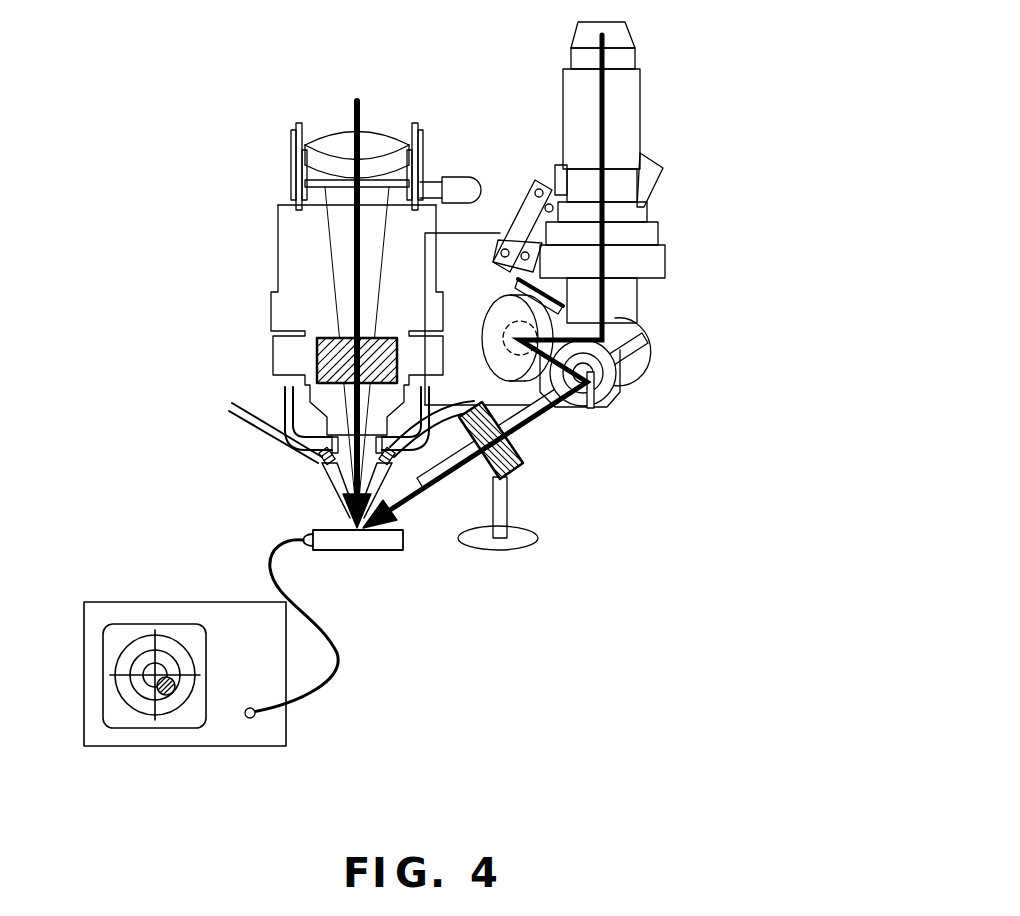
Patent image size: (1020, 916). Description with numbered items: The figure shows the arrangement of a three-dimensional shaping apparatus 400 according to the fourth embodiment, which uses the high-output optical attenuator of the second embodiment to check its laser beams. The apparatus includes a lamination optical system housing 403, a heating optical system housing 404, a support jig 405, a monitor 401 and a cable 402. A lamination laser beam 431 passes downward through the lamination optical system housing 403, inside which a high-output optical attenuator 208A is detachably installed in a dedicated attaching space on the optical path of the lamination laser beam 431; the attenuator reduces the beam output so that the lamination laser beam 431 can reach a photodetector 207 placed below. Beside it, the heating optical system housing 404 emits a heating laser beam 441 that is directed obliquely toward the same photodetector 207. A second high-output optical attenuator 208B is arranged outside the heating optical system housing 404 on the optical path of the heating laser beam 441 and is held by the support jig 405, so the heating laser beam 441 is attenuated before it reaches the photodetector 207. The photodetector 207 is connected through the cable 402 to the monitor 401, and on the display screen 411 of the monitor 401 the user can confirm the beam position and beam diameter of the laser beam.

The 3D shaping apparatus 400 is at (244, 176).
The lamination optical system housing 403 is at (278, 236).
The lamination laser beam 431 is at (355, 282).
The high-output optical attenuator 208A is at (317, 355).
The heating optical system housing 404 is at (640, 88).
The heating laser beam 441 is at (665, 262).
The support jig 405 is at (538, 540).
The high-output optical attenuator 208B is at (518, 470).
The photodetector 207 is at (392, 550).
The cable 402 is at (340, 653).
The monitor 401 is at (135, 602).
The display screen 411 is at (103, 650).